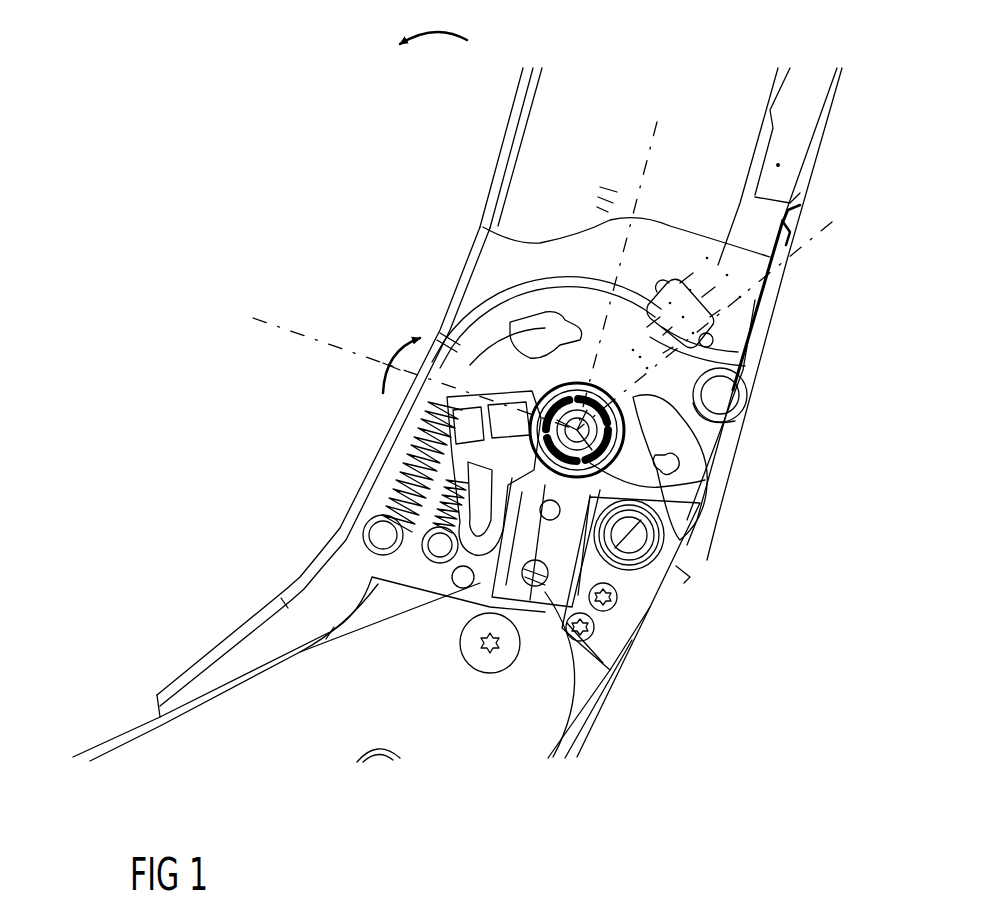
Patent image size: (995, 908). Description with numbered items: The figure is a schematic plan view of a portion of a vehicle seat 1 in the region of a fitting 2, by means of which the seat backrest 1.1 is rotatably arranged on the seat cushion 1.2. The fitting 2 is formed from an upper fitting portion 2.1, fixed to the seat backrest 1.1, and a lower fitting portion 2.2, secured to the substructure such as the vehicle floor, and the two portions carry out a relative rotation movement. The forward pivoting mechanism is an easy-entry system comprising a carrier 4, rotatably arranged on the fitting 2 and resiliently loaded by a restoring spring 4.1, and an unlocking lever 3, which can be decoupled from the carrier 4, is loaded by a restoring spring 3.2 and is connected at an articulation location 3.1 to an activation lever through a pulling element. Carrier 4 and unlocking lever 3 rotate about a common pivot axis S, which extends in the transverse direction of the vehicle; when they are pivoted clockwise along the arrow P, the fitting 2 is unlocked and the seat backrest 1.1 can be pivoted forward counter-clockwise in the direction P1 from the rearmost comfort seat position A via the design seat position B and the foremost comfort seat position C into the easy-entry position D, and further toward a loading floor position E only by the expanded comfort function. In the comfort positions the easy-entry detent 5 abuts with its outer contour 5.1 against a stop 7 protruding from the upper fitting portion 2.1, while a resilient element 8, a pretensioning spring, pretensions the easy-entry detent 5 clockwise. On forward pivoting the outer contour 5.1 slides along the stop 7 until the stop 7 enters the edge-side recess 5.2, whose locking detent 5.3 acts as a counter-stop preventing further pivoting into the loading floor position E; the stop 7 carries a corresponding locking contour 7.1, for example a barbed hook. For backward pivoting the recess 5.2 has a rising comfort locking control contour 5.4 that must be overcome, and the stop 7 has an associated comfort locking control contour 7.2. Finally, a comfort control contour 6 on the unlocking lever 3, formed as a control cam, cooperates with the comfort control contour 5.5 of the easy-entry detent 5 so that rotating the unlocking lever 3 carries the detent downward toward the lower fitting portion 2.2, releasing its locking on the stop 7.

The vehicle seat 1 is at (294, 80).
The seat backrest 1.1 is at (533, 140).
The seat cushion 1.2 is at (160, 753).
The fitting 2 is at (347, 380).
The upper fitting portion 2.1 is at (490, 263).
The lower fitting portion 2.2 is at (270, 640).
The unlocking lever 3 is at (533, 537).
The articulation location 3.1 is at (563, 535).
The restoring spring 3.2 is at (363, 531).
The carrier 4 is at (483, 460).
The restoring spring 4.1 is at (415, 478).
The easy-entry detent 5 is at (705, 440).
The outer contour 5.1 is at (655, 340).
The recess 5.2 is at (559, 330).
The locking detent 5.3 is at (540, 327).
The comfort locking control contour 5.4 is at (588, 189).
The comfort control contour 5.5 is at (656, 420).
The comfort control contour 6 is at (722, 422).
The stop 7 is at (697, 326).
The locking contour 7.1 is at (650, 300).
The comfort locking control contour 7.2 is at (704, 343).
The resilient element 8 is at (647, 570).
The pivot axis S is at (648, 404).
The easy-entry position D is at (622, 260).
The seat position A is at (718, 316).
The seat position B is at (824, 184).
The seat position C is at (786, 158).
The loading floor position E is at (403, 363).
The arrow P is at (401, 358).
The direction P1 is at (419, 59).